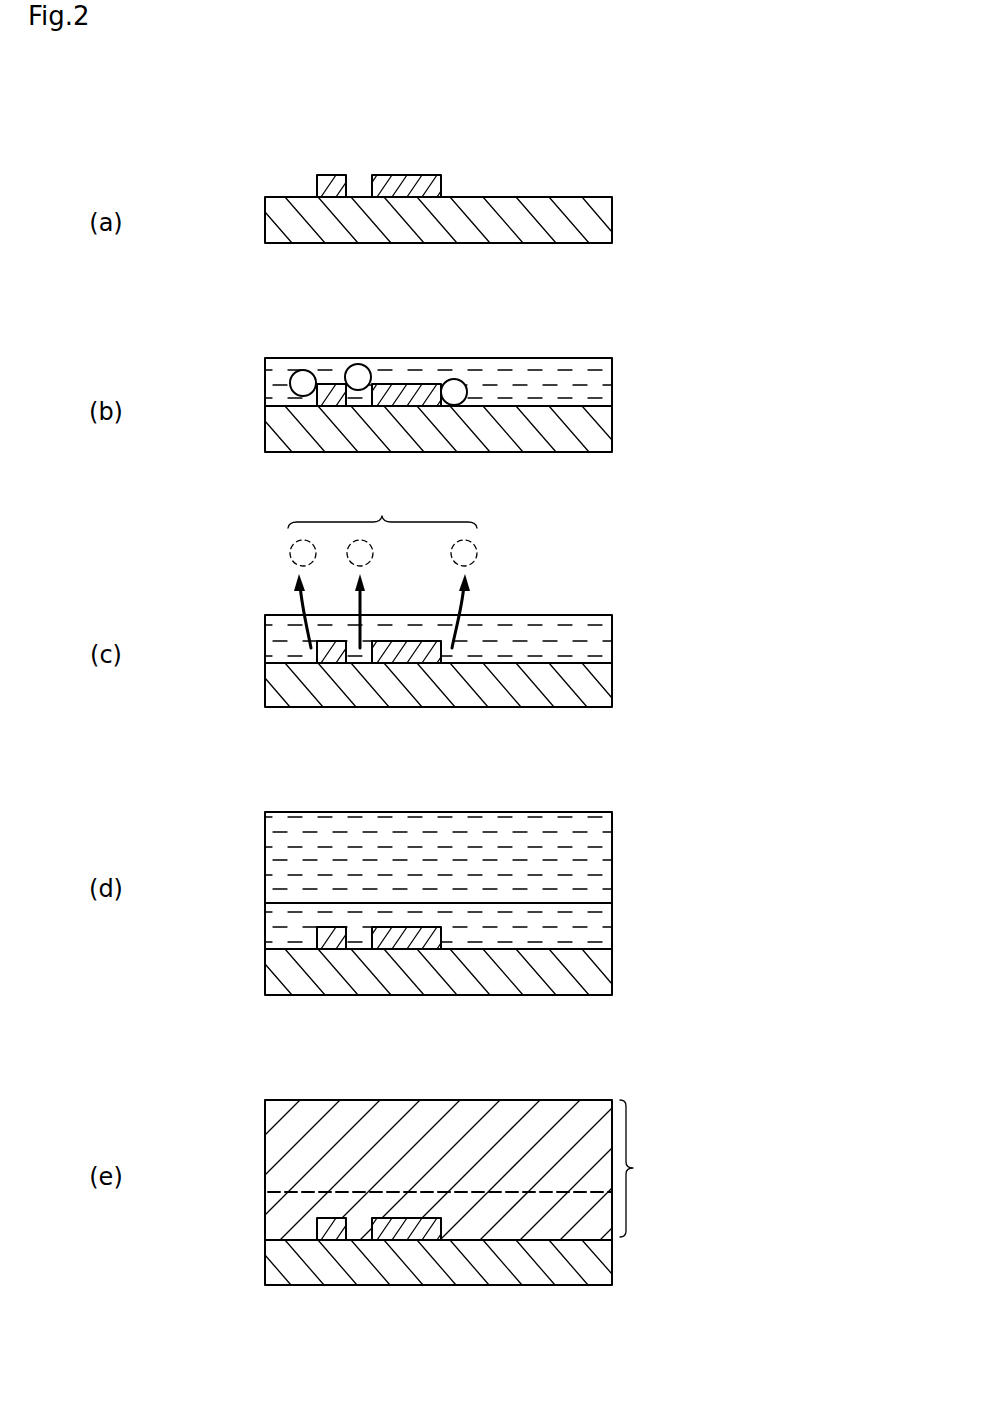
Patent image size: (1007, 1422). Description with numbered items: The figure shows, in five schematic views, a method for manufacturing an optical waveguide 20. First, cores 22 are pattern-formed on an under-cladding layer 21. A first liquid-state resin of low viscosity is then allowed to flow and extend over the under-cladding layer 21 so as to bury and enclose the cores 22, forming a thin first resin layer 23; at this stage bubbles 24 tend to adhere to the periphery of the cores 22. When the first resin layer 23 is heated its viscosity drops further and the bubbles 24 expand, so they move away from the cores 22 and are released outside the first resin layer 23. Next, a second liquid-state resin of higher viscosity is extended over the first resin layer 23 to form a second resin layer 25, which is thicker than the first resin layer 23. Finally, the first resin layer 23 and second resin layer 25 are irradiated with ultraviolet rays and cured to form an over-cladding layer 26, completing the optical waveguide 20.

The optical waveguide 20 is at (242, 1191).
The under-cladding layer 21 is at (582, 220).
The cores 22 is at (410, 175).
The first resin layer 23 is at (573, 392).
The bubbles 24 is at (303, 370).
The second resin layer 25 is at (575, 853).
The over-cladding layer 26 is at (470, 1170).